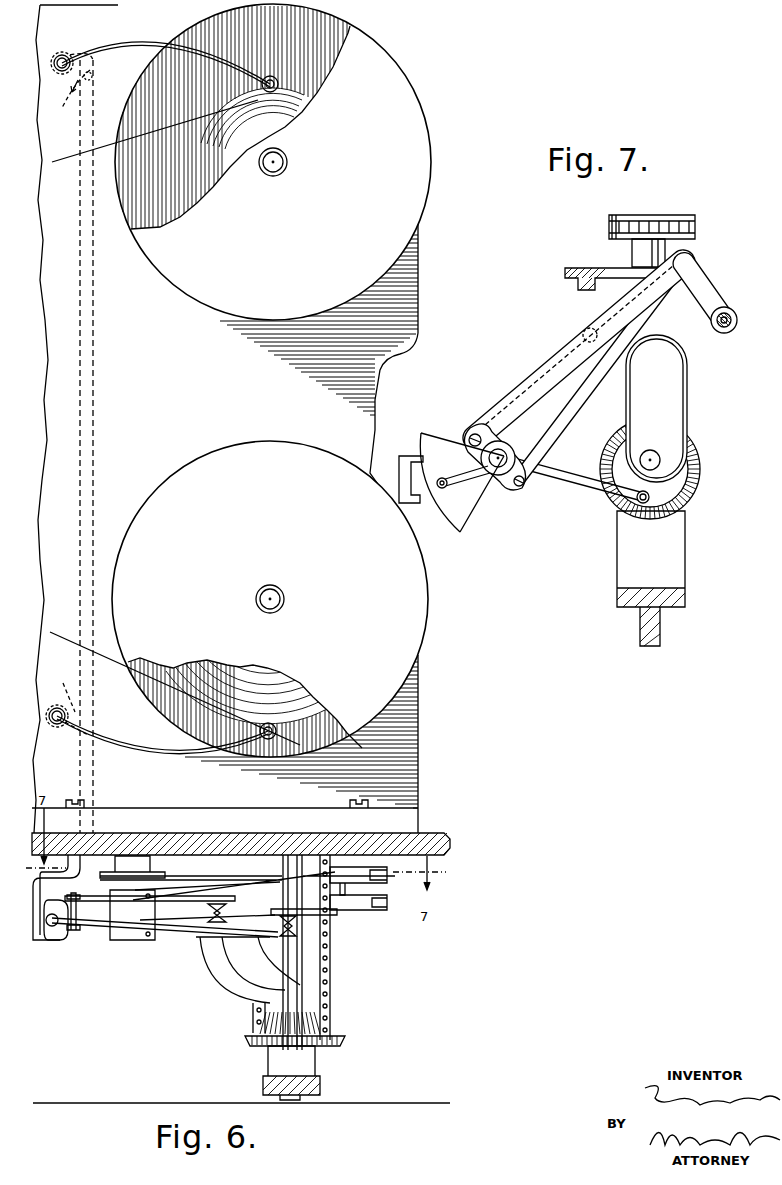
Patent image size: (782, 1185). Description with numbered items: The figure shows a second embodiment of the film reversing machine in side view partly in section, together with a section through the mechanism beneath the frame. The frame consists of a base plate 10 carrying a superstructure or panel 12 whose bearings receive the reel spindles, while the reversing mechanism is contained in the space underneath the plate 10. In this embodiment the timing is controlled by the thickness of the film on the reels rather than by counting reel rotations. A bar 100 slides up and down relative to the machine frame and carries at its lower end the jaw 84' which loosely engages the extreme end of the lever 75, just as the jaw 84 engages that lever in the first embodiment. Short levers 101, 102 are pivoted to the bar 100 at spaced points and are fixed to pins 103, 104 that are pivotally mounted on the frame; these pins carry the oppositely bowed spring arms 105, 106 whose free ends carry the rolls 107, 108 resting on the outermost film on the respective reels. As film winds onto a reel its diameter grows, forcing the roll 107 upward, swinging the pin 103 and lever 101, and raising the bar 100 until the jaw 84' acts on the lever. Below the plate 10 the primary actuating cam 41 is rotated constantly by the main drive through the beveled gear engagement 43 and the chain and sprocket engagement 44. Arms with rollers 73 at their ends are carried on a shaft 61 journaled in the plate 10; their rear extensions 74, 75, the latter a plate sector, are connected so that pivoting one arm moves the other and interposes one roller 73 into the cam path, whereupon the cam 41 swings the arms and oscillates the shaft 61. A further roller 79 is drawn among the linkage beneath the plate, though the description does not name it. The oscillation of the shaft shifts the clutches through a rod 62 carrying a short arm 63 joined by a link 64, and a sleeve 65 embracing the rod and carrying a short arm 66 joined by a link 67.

In FIG. 6, the base plate 10 is at (446, 852).
In FIG. 6, the panel 12 is at (420, 316).
In FIG. 6, the cam 41 is at (310, 916).
In FIG. 7, the cam 41 is at (688, 394).
In FIG. 7, the beveled gear engagement 43 is at (700, 475).
In FIG. 6, the chain and sprocket engagement 44 is at (332, 966).
In FIG. 7, the chain and sprocket engagement 44 is at (696, 228).
In FIG. 7, the shaft 61 is at (498, 476).
In FIG. 6, the rod 62 is at (375, 907).
In FIG. 7, the rod 62 is at (737, 316).
In FIG. 7, the short arm 63 is at (683, 270).
In FIG. 6, the link 64 is at (207, 901).
In FIG. 6, the sleeve 65 is at (388, 880).
In FIG. 7, the sleeve 65 is at (728, 332).
In FIG. 7, the short arm 66 is at (712, 285).
In FIG. 6, the link 67 is at (262, 880).
In FIG. 6, the roller 73 is at (288, 938).
In FIG. 7, the roller 73 is at (582, 324).
In FIG. 6, the rear extension 74 is at (100, 902).
In FIG. 7, the rear extension 74 is at (455, 480).
In FIG. 6, the rear extension 75 is at (80, 935).
In FIG. 7, the rear extension 75 is at (462, 522).
In FIG. 6, the roller 79 is at (206, 913).
In FIG. 7, the jaw 84 is at (410, 456).
In FIG. 6, the jaw 84' is at (56, 912).
In FIG. 6, the bar 100 is at (85, 337).
In FIG. 6, the short lever 101 is at (70, 91).
In FIG. 6, the short lever 102 is at (67, 700).
In FIG. 6, the pin 103 is at (63, 55).
In FIG. 6, the pin 104 is at (56, 726).
In FIG. 6, the spring arm 105 is at (141, 44).
In FIG. 6, the spring arm 106 is at (126, 743).
In FIG. 6, the roll 107 is at (279, 82).
In FIG. 6, the roll 108 is at (276, 724).